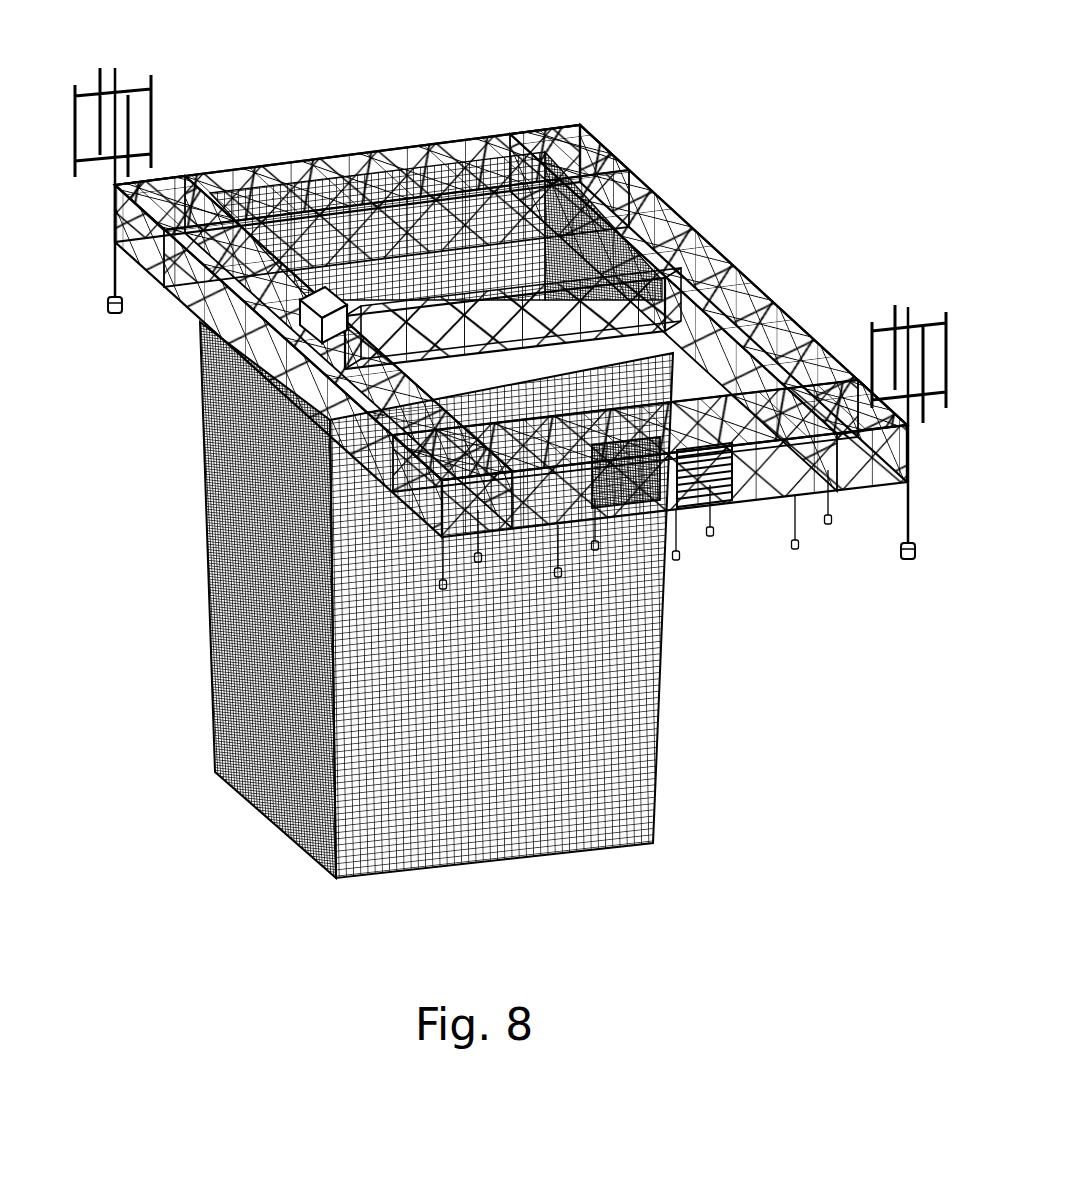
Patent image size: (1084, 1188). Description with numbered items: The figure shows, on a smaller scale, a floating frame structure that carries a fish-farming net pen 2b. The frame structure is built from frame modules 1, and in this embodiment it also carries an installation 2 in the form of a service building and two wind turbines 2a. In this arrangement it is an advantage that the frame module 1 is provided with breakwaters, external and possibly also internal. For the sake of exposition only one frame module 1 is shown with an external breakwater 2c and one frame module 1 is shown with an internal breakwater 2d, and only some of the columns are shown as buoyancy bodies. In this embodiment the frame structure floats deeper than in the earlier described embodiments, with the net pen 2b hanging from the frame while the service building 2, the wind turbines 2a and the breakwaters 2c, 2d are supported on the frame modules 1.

The frame module 1 is at (645, 196).
The installation 2 is at (190, 305).
The wind turbines 2a is at (197, 80).
The fish-farming net pen 2b is at (180, 523).
The external breakwater 2c is at (720, 498).
The internal breakwater 2d is at (665, 440).